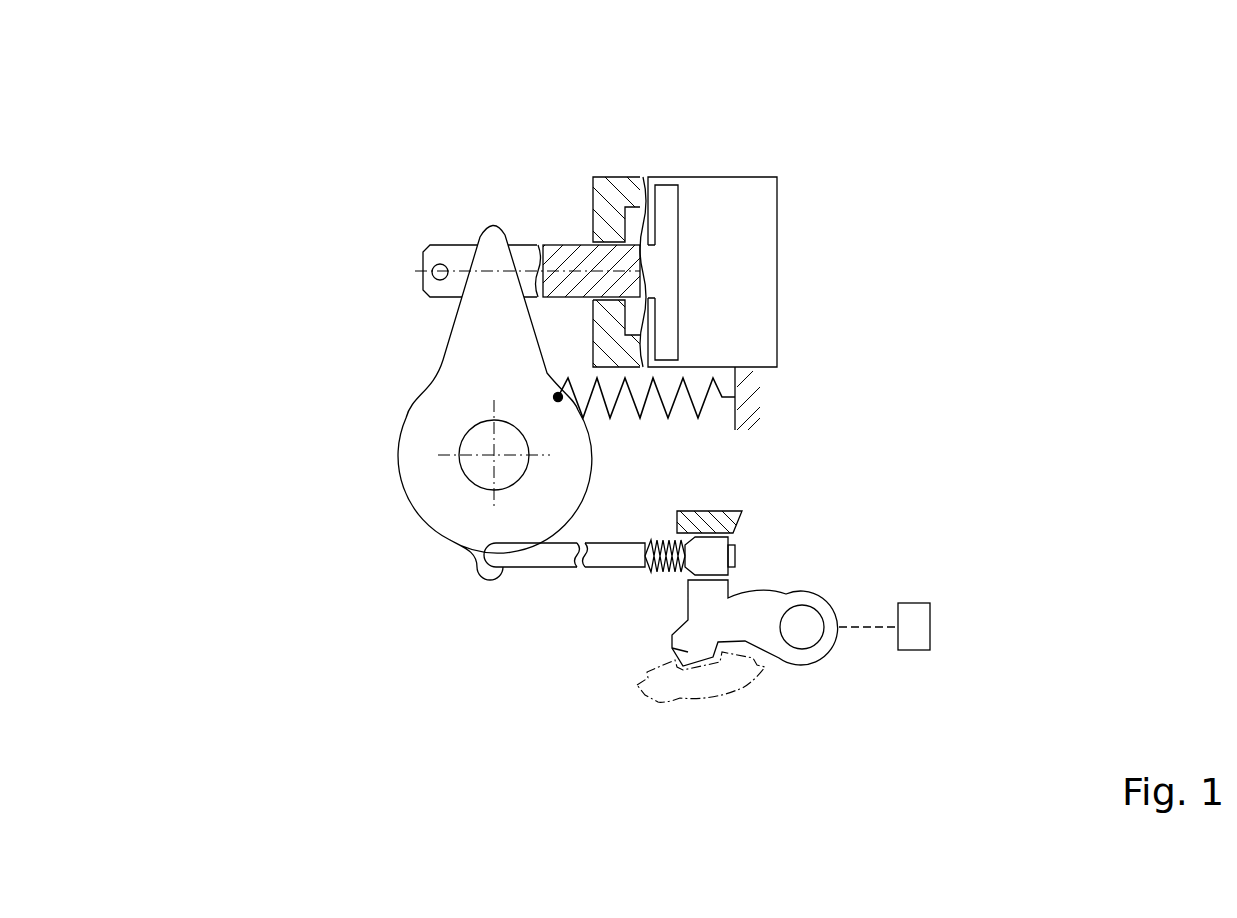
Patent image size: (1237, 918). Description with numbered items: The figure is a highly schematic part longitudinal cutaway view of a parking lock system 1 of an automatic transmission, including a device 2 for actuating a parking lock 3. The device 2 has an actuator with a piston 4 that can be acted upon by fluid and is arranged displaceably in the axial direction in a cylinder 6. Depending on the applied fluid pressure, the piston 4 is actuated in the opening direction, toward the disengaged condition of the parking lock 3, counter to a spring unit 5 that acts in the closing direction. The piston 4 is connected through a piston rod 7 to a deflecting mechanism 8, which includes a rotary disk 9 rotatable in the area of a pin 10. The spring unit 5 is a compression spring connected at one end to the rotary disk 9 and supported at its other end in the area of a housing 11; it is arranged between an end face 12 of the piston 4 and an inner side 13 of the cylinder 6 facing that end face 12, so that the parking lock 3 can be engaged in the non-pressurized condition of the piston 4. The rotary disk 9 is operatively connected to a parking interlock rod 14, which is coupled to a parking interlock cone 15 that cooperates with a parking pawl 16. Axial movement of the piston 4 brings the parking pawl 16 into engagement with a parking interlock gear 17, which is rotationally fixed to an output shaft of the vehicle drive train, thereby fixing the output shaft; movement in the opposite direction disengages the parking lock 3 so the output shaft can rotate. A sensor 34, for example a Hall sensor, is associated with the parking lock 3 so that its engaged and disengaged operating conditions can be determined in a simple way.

The parking lock system 1 is at (349, 190).
The device 2 is at (812, 247).
The parking lock 3 is at (843, 573).
The piston 4 is at (667, 205).
The spring unit 5 is at (648, 412).
The cylinder 6 is at (747, 177).
The piston rod 7 is at (558, 245).
The deflecting mechanism 8 is at (371, 478).
The rotary disk 9 is at (470, 328).
The pin 10 is at (462, 439).
The housing 11 is at (742, 402).
The end face 12 is at (643, 177).
The inner side 13 is at (593, 213).
The parking interlock rod 14 is at (550, 556).
The parking interlock cone 15 is at (718, 556).
The parking pawl 16 is at (690, 652).
The parking interlock gear 17 is at (708, 682).
The sensor 34 is at (915, 652).